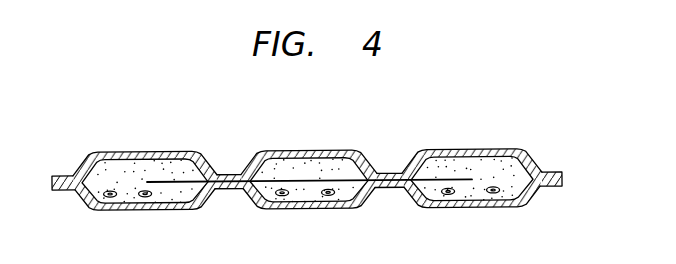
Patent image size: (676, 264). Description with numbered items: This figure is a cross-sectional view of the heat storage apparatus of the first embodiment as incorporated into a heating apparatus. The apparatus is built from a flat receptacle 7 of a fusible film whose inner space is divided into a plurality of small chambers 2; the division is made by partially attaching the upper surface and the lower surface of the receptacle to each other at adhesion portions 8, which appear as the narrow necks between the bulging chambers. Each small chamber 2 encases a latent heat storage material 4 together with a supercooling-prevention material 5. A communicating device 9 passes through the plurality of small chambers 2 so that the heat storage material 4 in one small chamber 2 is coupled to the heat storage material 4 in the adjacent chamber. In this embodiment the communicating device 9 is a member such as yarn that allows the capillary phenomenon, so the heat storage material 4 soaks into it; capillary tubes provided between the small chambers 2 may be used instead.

The small chamber 2 is at (145, 149).
The latent heat storage material 4 is at (510, 182).
The supercooling-prevention material 5 is at (145, 197).
The flat receptacle 7 is at (468, 209).
The adhesion portion 8 is at (381, 189).
The communicating device 9 is at (251, 197).